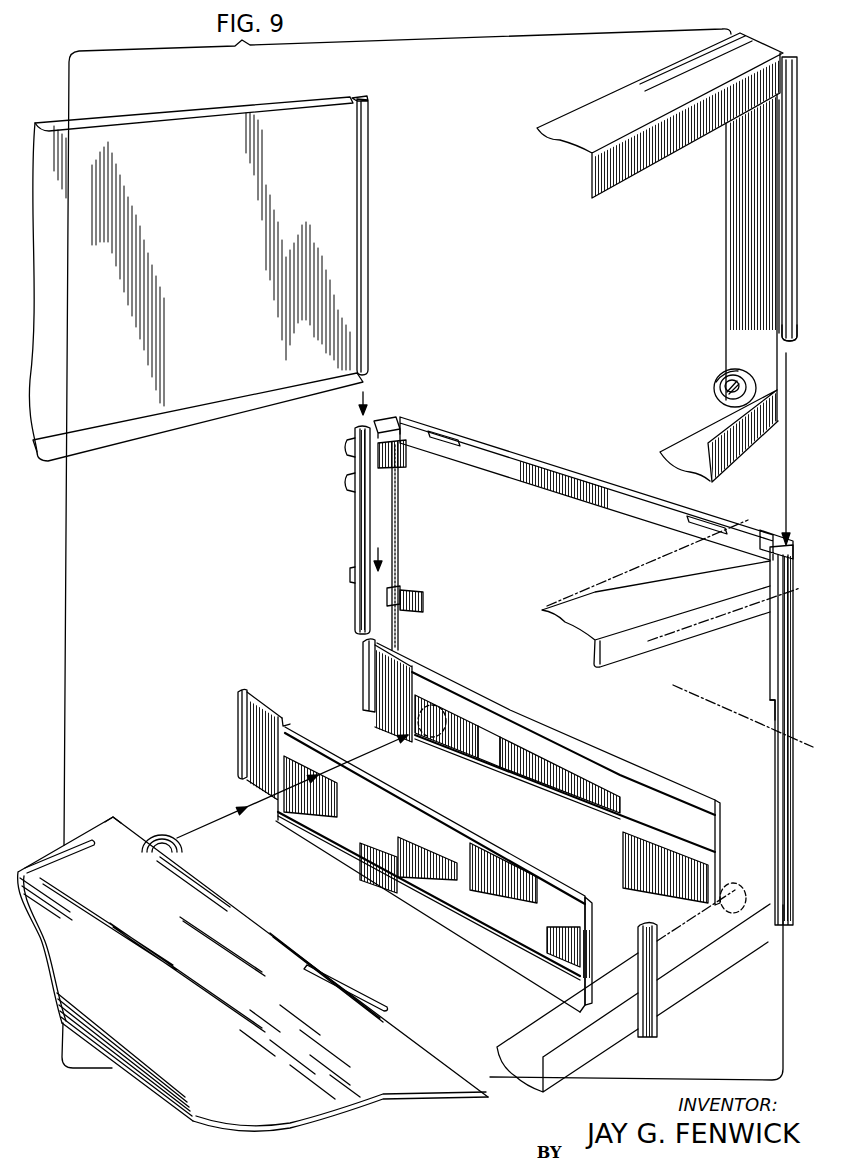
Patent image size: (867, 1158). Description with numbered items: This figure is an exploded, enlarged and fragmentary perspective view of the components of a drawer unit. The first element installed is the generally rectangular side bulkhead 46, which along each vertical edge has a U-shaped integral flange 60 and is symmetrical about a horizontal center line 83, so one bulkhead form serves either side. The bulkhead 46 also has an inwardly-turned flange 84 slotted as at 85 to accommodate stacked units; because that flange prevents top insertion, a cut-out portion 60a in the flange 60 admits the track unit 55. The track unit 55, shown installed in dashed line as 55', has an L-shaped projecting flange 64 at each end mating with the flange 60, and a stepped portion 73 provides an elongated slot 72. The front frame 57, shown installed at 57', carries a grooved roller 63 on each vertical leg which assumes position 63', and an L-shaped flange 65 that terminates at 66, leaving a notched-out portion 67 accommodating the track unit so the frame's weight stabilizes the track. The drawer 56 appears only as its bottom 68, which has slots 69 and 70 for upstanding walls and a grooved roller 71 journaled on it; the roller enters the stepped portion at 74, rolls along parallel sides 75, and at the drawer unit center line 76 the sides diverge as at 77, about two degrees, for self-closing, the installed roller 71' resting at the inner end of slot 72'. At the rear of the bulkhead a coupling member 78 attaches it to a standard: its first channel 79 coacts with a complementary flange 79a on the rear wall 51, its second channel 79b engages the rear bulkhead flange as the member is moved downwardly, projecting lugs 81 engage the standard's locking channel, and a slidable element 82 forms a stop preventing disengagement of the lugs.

The rear wall 51 is at (203, 293).
The complementary flange 79a is at (368, 236).
The second channel 79b is at (381, 420).
The projecting lugs 81 is at (345, 446).
The first longitudinally-extending channel 79 is at (357, 537).
The coupling member 78 is at (400, 522).
The slidable element 82 is at (405, 597).
The slot 85 is at (450, 431).
The inwardly-turned flange 84 is at (596, 477).
The side bulkhead 46 is at (596, 482).
The front frame 57 is at (660, 118).
The L-shaped flange 65 is at (799, 55).
The terminating point of flange 66 is at (796, 334).
The notched-out portion 67 is at (779, 373).
The grooved roller 63 is at (711, 387).
The installed position of front frame 57' is at (671, 593).
The U-shaped integral flange 60 is at (787, 617).
The cut-out portion 60a is at (793, 716).
The horizontal center line 83 is at (718, 707).
The installed position of track unit 55' is at (547, 767).
The track unit 55 is at (427, 826).
The stepped portion 73 is at (283, 717).
The L-shaped projecting flange 64 is at (243, 688).
The installed position of roller 71' is at (439, 683).
The installed slot 72' is at (494, 701).
The elongated slot 72 is at (393, 825).
The drawer 56 is at (104, 815).
The grooved roller 71 is at (166, 812).
The slot 70 is at (70, 851).
The bottom 68 is at (253, 947).
The slot 69 is at (350, 1000).
The diverging side 77 is at (357, 835).
The drawer unit center line 76 is at (409, 866).
The parallel sides 75 is at (502, 906).
The roller entry of stepped portion 74 is at (580, 905).
The installed position of roller 63' is at (744, 940).